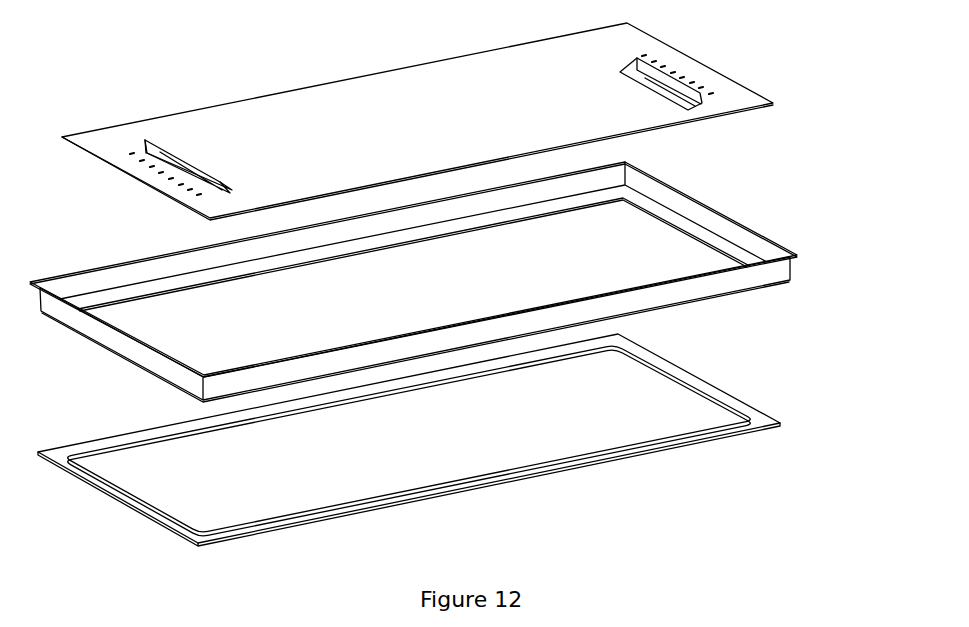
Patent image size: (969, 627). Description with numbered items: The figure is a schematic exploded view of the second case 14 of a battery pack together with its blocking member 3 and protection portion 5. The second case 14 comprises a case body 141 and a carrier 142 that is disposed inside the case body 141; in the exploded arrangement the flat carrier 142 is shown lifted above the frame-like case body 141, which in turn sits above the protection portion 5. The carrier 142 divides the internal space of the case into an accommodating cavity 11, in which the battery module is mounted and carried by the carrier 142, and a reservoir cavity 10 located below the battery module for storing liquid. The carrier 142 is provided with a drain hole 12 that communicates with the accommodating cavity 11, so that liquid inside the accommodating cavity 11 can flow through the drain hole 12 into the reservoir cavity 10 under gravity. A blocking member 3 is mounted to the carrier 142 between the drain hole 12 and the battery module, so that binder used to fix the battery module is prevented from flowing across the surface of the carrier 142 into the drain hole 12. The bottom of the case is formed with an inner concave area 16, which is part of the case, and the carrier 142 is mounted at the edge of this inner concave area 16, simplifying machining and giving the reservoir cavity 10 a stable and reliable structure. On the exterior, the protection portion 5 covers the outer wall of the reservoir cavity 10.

The second case 14 is at (856, 48).
The carrier 142 is at (727, 92).
The case body 141 is at (753, 250).
The blocking member 3 is at (172, 163).
The drain hole 12 is at (133, 158).
The accommodating cavity 11 is at (98, 288).
The inner concave area 16 is at (665, 252).
The reservoir cavity 10 is at (110, 475).
The protection portion 5 is at (713, 413).